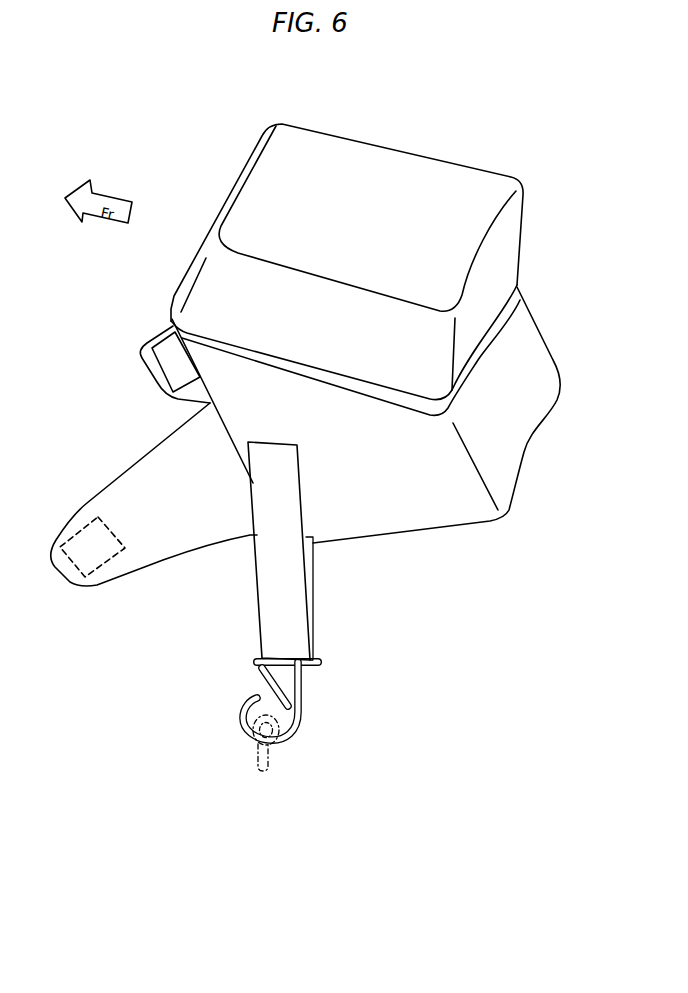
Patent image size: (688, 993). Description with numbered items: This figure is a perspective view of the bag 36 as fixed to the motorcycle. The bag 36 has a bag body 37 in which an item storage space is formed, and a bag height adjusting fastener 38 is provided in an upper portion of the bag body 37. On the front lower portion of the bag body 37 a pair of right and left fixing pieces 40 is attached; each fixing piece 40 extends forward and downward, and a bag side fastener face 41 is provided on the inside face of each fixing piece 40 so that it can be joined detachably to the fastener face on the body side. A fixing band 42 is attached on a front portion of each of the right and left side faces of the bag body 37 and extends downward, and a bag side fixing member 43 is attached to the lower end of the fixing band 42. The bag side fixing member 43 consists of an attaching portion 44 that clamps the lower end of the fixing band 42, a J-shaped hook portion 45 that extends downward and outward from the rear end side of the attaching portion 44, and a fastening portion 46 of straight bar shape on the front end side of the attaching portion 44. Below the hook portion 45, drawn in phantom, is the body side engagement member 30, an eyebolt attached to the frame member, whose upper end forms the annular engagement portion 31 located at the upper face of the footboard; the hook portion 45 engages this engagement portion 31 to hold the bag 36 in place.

The body side engagement member 30 is at (274, 760).
The engagement portion 31 is at (281, 740).
The bag 36 is at (548, 181).
The bag body 37 is at (513, 258).
The bag height adjusting fastener 38 is at (513, 300).
The fixing piece 40 is at (158, 340).
The bag side fastener face 41 is at (170, 368).
The fixing band 42 is at (295, 582).
The bag side fixing member 43 is at (296, 697).
The attaching portion 44 is at (323, 663).
The hook portion 45 is at (303, 698).
The fastening portion 46 is at (265, 694).